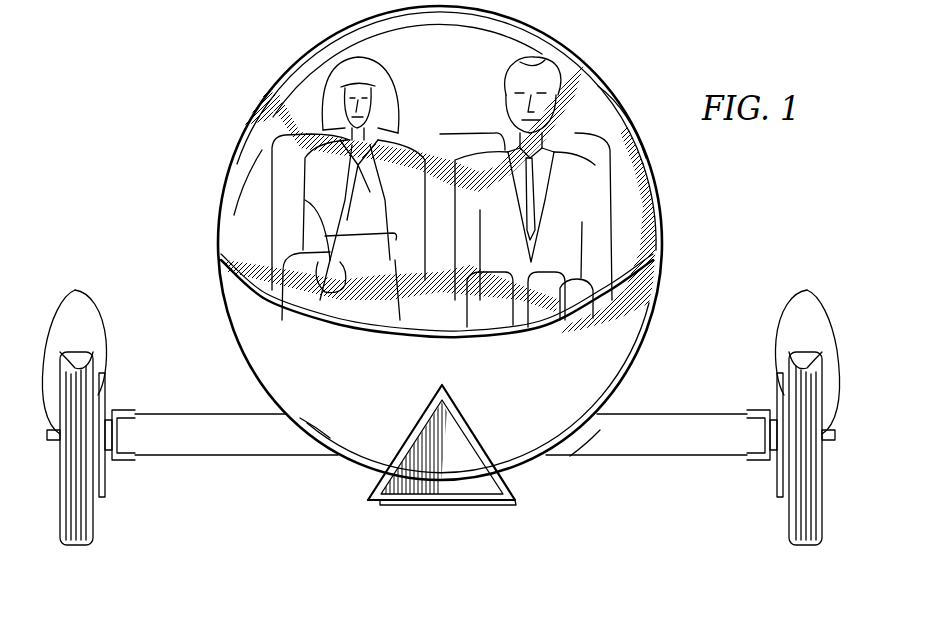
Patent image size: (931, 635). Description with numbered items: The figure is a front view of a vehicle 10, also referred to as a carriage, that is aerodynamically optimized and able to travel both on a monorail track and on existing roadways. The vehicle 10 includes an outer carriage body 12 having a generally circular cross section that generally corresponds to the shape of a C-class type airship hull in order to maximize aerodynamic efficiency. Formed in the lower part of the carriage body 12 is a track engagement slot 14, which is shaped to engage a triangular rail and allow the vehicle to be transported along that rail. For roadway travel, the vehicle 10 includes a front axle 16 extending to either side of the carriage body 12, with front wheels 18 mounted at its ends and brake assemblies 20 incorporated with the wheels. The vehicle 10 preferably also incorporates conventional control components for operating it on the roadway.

The vehicle 10 is at (245, 88).
The outer carriage body 12 is at (645, 352).
The track engagement slot 14 is at (423, 498).
The front axle 16 is at (652, 458).
The front wheels 18 is at (93, 520).
The brake assemblies 20 is at (73, 290).